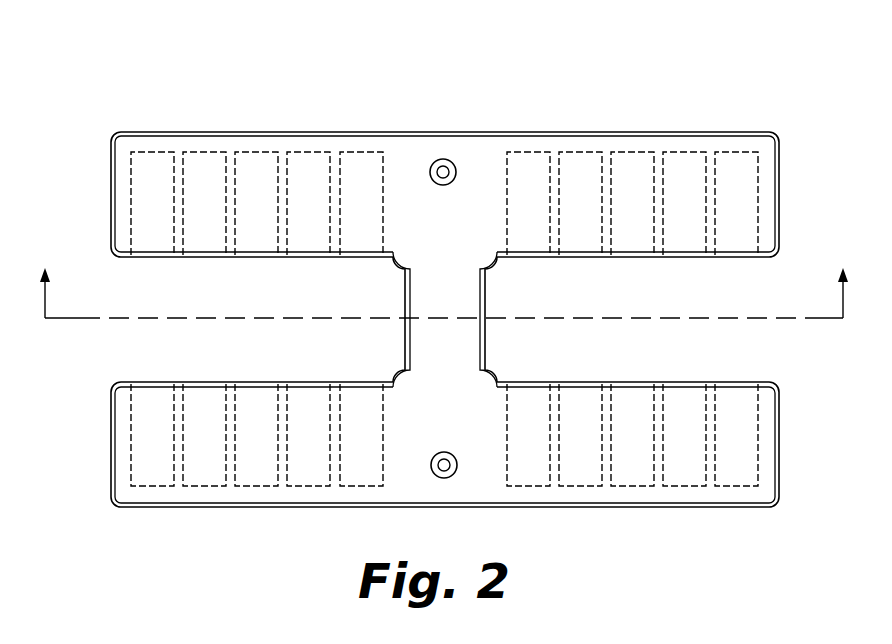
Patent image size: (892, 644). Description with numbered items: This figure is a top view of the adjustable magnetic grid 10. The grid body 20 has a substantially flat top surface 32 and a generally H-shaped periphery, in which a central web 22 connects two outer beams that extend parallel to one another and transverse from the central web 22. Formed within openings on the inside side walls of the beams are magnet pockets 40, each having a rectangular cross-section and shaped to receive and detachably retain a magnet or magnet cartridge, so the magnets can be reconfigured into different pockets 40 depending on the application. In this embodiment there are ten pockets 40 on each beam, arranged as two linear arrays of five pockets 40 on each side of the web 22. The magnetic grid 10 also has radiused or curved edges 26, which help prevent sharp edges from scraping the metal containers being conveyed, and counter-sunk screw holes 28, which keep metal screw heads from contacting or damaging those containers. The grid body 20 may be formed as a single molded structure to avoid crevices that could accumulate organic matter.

The adjustable magnetic grid 10 is at (800, 84).
The grid body 20 is at (98, 155).
The central web 22 is at (460, 345).
The curved edges 26 is at (143, 507).
The counter-sunk screw holes 28 is at (451, 159).
The top surface 32 is at (435, 248).
The pocket 40 is at (770, 464).